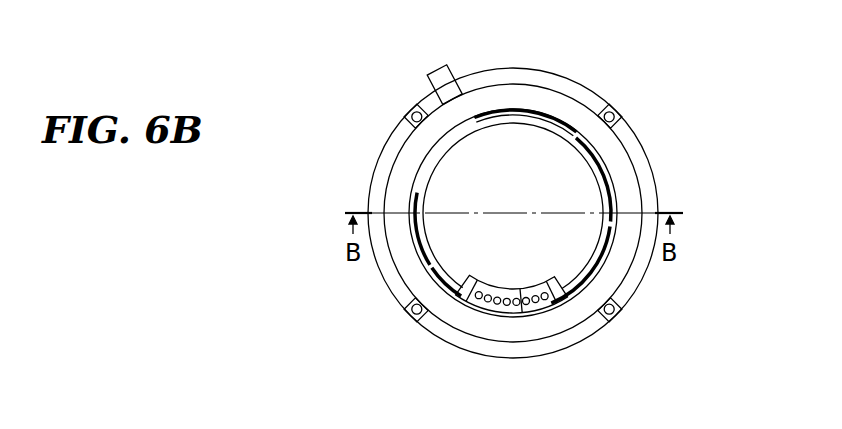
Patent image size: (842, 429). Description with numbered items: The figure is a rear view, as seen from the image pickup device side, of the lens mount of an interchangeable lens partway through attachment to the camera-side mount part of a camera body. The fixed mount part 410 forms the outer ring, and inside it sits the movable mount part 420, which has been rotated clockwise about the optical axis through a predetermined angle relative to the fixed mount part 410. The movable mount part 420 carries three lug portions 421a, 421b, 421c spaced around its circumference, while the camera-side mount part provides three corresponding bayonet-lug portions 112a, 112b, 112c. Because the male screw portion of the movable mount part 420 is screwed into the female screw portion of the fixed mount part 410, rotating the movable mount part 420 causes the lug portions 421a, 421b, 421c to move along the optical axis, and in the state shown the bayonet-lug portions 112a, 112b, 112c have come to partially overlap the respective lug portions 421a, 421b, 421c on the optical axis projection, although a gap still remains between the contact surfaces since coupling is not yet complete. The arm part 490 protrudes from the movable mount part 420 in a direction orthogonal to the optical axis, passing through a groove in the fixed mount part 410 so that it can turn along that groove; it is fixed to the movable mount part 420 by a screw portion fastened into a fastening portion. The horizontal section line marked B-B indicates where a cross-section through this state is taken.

The fixed mount part 410 is at (480, 110).
The movable mount part 420 is at (498, 93).
The arm part 490 is at (437, 78).
The bayonet-lug portion 112a is at (530, 108).
The bayonet-lug portion 112b is at (432, 281).
The bayonet-lug portion 112c is at (603, 260).
The lug portion 421a is at (412, 190).
The lug portion 421b is at (533, 313).
The lug portion 421c is at (600, 165).